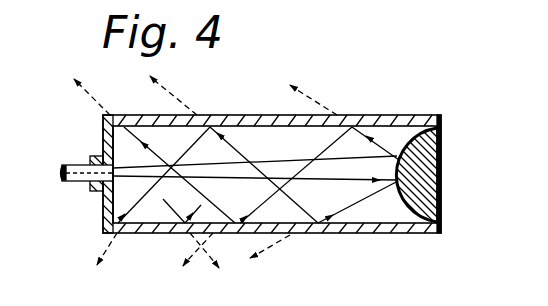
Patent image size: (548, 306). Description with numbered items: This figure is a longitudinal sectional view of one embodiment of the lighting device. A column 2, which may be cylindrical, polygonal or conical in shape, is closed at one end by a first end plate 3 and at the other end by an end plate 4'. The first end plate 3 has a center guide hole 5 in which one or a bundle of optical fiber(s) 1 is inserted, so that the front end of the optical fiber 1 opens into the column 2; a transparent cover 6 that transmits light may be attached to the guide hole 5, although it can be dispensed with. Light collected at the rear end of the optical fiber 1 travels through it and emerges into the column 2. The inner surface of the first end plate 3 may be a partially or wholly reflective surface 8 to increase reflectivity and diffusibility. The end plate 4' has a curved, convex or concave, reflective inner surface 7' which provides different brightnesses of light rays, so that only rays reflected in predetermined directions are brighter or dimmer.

The optical fiber 1 is at (84, 165).
The column 2 is at (391, 115).
The first end plate 3 is at (103, 133).
The end plate 4' is at (437, 186).
The guide hole 5 is at (90, 183).
The transparent cover 6 is at (119, 178).
The curved reflective inner surface 7' is at (413, 200).
The reflective surface 8 is at (108, 203).